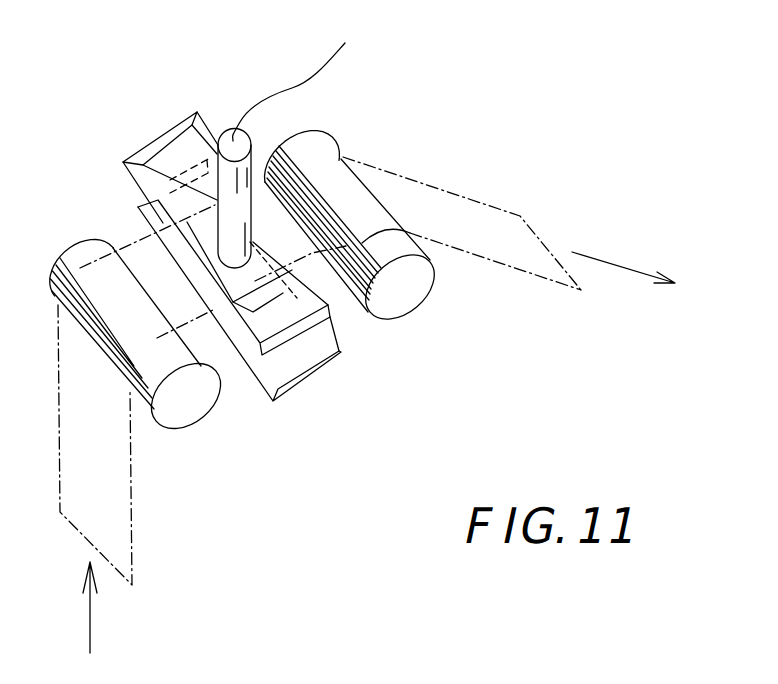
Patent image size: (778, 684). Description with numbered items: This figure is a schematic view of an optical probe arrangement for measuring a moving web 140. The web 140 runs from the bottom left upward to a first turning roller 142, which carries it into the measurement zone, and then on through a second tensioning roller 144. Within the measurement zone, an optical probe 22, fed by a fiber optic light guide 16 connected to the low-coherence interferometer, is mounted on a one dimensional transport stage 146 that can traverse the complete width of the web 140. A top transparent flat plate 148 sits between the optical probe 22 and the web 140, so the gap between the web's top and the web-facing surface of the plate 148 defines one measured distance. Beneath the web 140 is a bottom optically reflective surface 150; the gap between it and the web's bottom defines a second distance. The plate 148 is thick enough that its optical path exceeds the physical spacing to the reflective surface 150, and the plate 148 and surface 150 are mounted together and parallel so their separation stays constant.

The fiber optic light guide 16 is at (292, 87).
The optical probe 22 is at (234, 143).
The web 140 is at (428, 196).
The first turning roller 142 is at (177, 413).
The second tensioning roller 144 is at (415, 278).
The one dimensional transport stage 146 is at (200, 197).
The top transparent flat plate 148 is at (150, 143).
The bottom optically reflective surface 150 is at (303, 377).